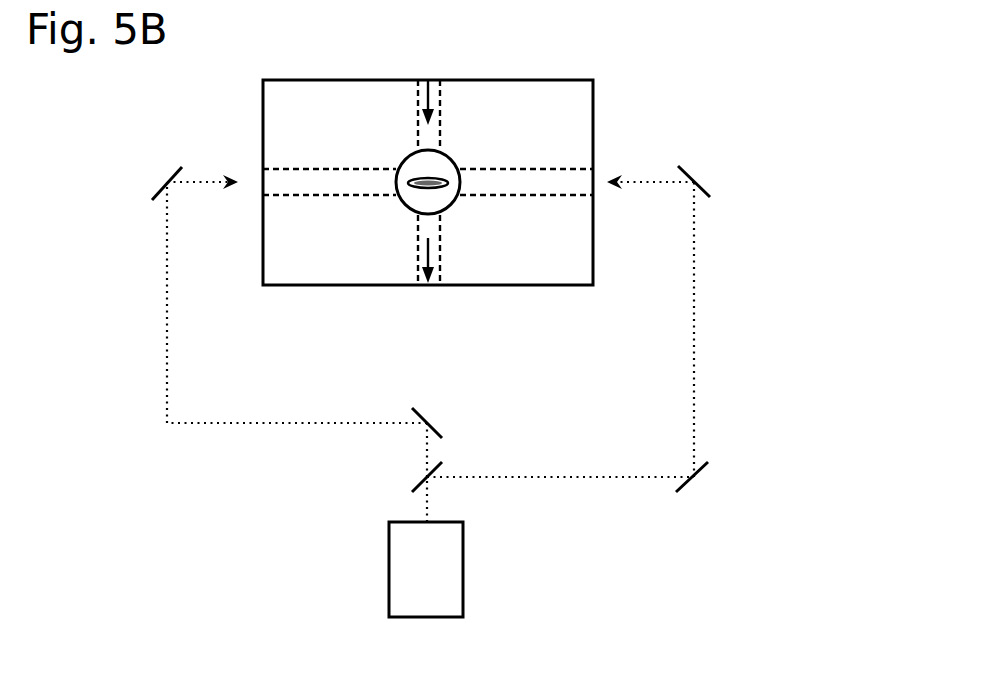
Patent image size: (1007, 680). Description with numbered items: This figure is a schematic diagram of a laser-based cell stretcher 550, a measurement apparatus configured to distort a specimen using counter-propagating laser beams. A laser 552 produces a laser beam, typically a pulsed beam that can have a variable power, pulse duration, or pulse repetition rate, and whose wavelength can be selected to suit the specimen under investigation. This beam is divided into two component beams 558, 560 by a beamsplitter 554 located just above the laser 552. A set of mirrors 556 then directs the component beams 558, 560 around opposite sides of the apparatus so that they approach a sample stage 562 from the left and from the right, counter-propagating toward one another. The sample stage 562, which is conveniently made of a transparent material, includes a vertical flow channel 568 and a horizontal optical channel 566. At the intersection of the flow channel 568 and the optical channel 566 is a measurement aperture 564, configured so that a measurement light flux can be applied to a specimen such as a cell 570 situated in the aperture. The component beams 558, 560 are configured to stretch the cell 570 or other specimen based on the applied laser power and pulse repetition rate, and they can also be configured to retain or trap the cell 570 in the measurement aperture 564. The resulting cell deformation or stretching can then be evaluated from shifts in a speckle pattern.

The optical system 550 is at (161, 526).
The laser 552 is at (440, 522).
The beamsplitter 554 is at (424, 481).
The mirror 556 is at (170, 176).
The component beam 558 is at (165, 323).
The component beam 560 is at (557, 476).
The sample stage 562 is at (530, 80).
The measurement aperture 564 is at (456, 160).
The optical channel 566 is at (262, 178).
The flow channel 568 is at (418, 130).
The cell 570 is at (432, 187).